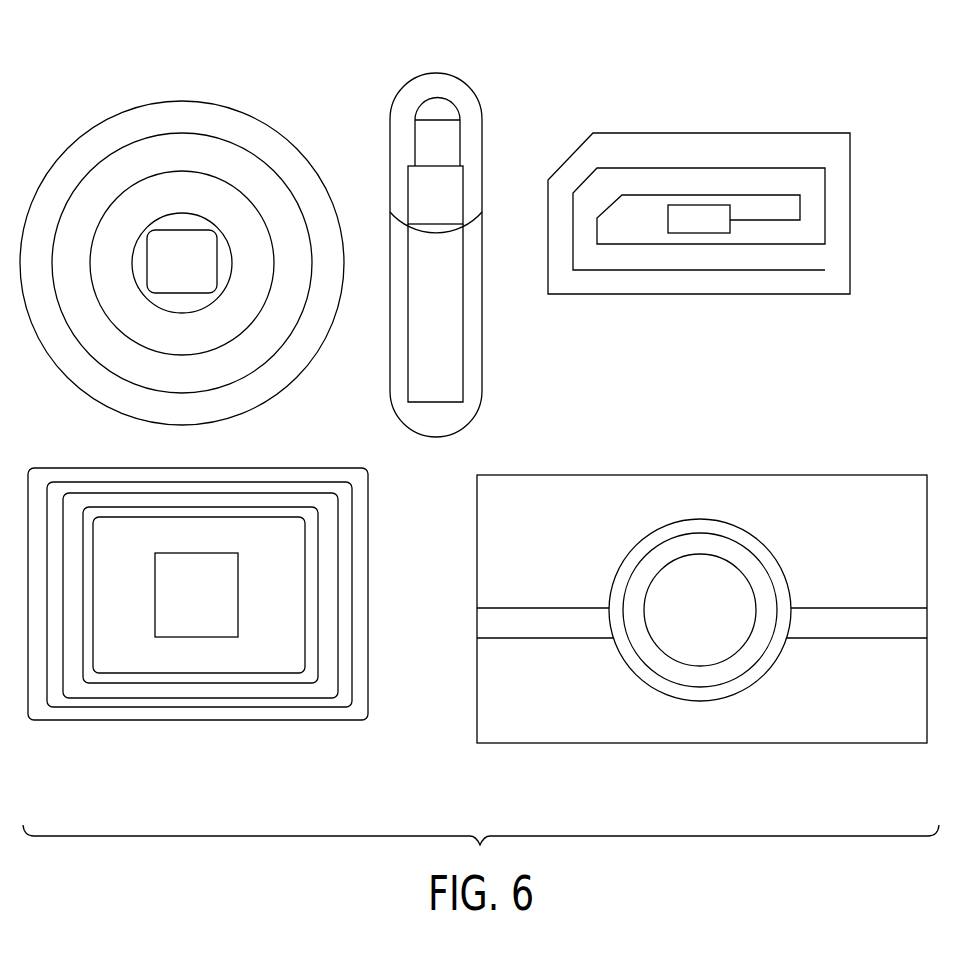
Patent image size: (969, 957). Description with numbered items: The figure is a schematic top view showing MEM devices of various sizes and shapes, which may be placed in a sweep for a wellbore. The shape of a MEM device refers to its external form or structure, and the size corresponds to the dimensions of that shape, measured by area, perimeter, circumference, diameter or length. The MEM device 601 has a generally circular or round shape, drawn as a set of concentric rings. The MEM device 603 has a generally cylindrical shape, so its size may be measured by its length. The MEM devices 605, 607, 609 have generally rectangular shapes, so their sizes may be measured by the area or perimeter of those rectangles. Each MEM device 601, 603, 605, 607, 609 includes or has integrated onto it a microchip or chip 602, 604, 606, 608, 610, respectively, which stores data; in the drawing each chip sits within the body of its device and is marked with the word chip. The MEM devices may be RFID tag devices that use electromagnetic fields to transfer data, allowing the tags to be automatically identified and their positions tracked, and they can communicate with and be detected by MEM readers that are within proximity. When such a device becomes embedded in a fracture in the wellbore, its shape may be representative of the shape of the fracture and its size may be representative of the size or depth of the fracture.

The MEM device 601 is at (100, 122).
The microchip or chip 602 is at (197, 227).
The MEM device 603 is at (406, 85).
The microchip or chip 604 is at (463, 166).
The MEM device 605 is at (785, 132).
The microchip or chip 606 is at (680, 207).
The MEM device 607 is at (250, 720).
The microchip or chip 608 is at (167, 637).
The MEM device 609 is at (790, 473).
The microchip or chip 610 is at (682, 658).